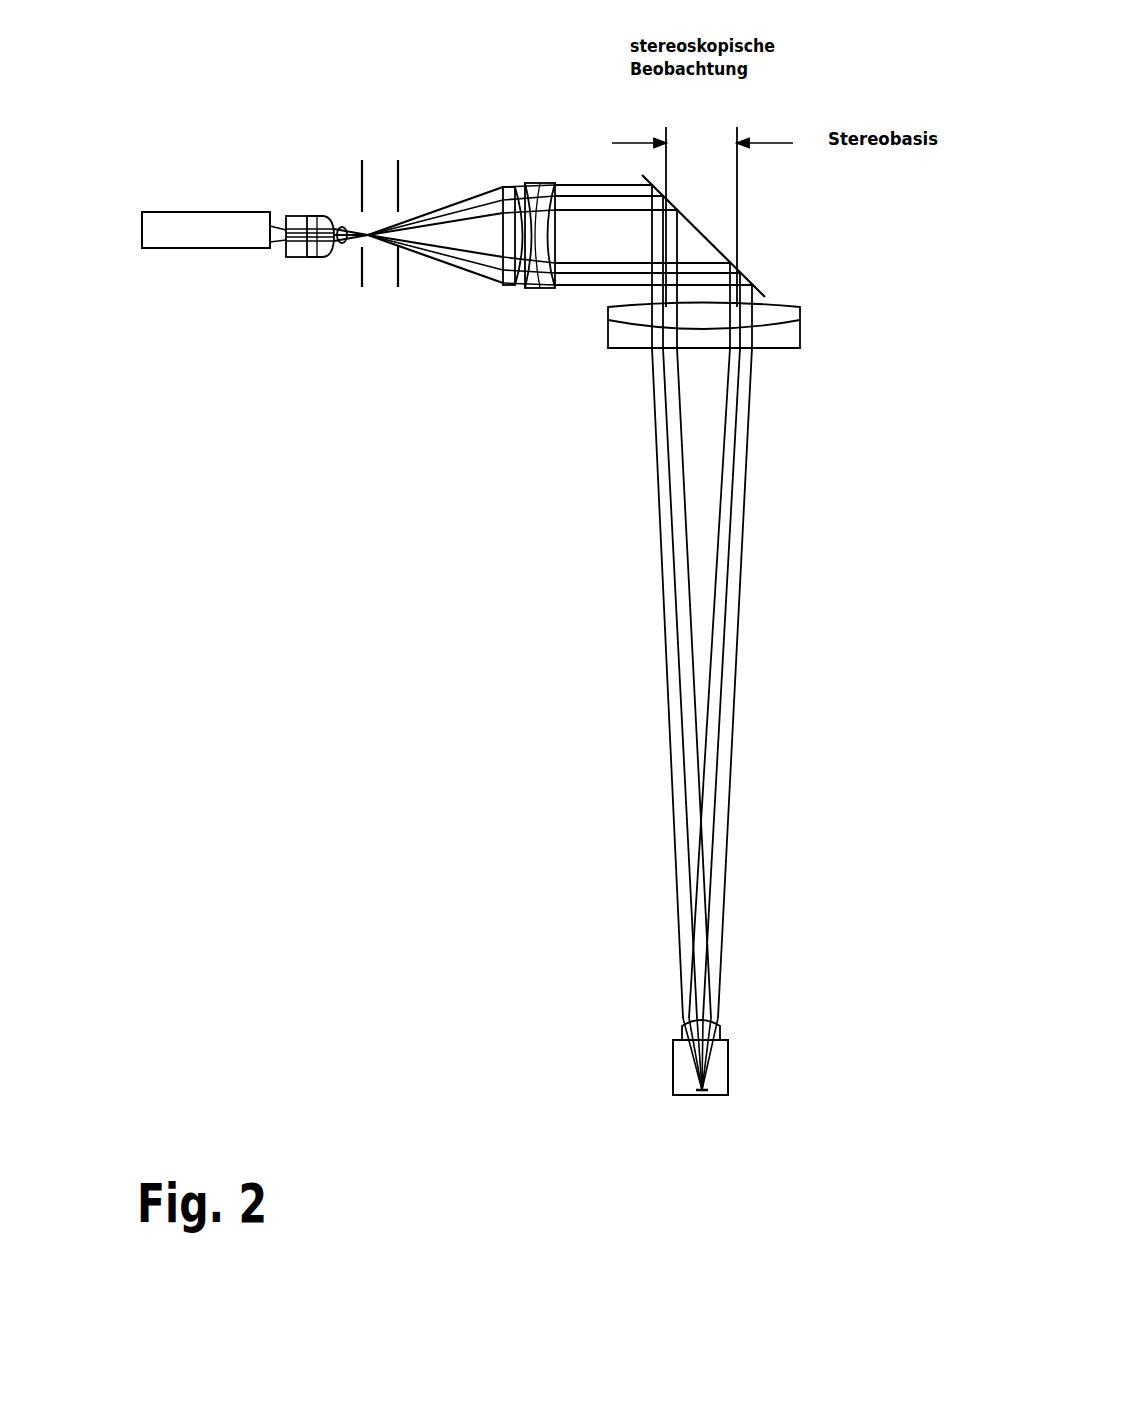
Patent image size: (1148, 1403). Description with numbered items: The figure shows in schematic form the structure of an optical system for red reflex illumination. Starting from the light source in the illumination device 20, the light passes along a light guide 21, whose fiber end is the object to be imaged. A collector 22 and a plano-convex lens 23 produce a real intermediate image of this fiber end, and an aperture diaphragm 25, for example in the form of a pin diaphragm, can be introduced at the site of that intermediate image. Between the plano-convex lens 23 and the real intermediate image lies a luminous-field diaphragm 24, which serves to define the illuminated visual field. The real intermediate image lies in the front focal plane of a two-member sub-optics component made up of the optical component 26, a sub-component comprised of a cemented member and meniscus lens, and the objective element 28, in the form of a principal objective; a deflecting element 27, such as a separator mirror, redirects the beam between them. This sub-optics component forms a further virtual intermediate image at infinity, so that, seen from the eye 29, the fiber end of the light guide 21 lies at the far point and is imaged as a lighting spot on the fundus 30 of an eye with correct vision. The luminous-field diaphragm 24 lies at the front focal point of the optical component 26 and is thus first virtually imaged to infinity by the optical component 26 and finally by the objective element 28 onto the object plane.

The illumination device 20 is at (180, 112).
The light guide 21 is at (207, 233).
The collector 22 is at (317, 258).
The plano-convex lens 23 is at (343, 212).
The luminous-field diaphragm 24 is at (365, 177).
The aperture diaphragm 25 is at (400, 207).
The optical component 26 is at (515, 298).
The deflecting element 27 is at (698, 229).
The objective element 28 is at (632, 338).
The eye 29 is at (678, 1068).
The fundus 30 is at (702, 1095).